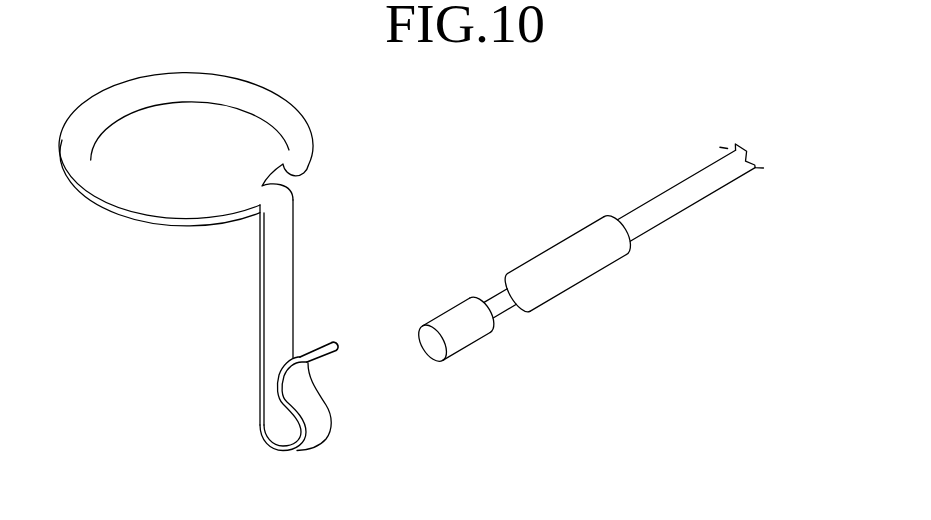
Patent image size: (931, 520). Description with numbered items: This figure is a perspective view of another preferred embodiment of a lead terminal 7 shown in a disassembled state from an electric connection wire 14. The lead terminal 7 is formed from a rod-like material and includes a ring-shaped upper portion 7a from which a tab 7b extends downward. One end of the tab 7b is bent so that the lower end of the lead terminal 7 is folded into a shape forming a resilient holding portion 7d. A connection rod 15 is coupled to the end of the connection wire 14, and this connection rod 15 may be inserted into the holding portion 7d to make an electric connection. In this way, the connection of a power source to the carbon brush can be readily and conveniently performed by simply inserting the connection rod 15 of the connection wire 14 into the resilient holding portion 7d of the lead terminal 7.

The lead terminal 7 is at (261, 262).
The ring portion of clip 7a is at (267, 102).
The tab 7b is at (273, 355).
The resilient holding portion 7d is at (317, 418).
The electric connection wire 14 is at (667, 208).
The connection rod 15 is at (573, 267).